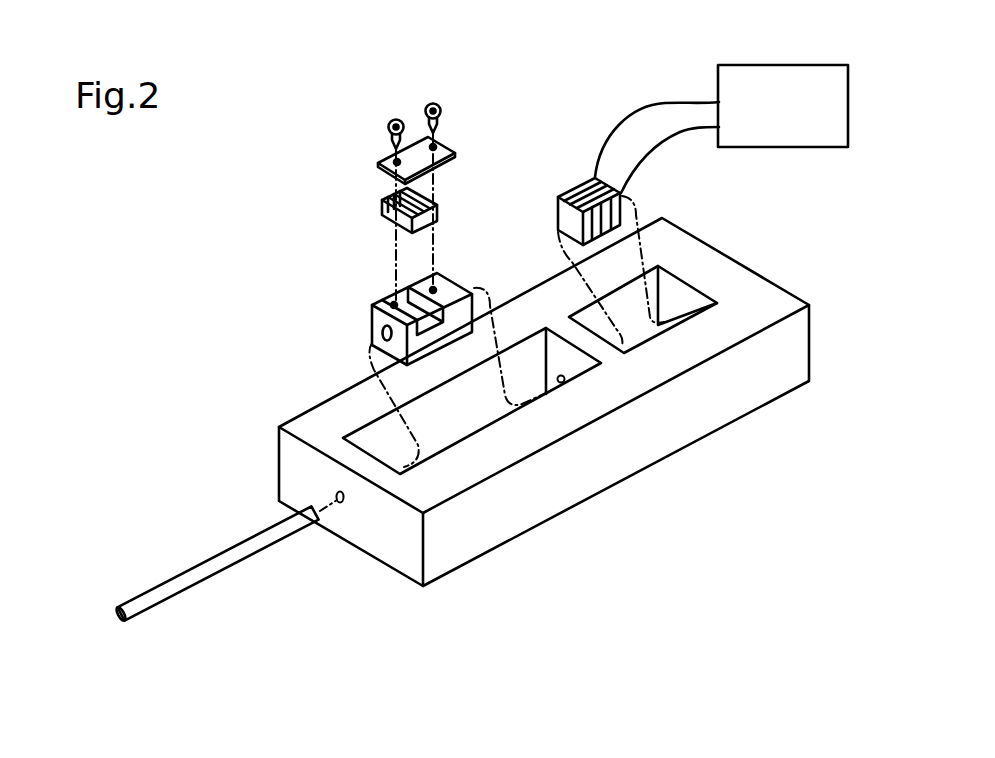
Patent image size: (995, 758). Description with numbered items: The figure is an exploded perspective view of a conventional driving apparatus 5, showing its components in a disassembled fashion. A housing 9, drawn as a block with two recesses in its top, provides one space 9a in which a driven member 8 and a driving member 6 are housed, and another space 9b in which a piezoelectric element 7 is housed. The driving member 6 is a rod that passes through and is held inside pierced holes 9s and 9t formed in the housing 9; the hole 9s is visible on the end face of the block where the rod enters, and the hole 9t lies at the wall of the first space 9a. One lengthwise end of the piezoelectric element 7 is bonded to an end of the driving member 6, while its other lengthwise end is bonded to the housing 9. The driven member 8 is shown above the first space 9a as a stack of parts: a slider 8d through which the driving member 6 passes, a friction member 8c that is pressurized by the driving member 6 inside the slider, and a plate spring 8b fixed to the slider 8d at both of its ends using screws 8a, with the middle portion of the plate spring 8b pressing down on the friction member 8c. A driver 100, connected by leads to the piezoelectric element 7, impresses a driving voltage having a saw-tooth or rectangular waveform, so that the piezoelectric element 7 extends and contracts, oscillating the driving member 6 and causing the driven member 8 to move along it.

The driving apparatus 5 is at (613, 523).
The driving member 6 is at (212, 561).
The piezoelectric element 7 is at (577, 188).
The driven member 8 is at (274, 304).
The screws 8a is at (384, 125).
The plate spring 8b is at (377, 165).
The friction member 8c is at (371, 212).
The slider 8d is at (372, 320).
The housing 9 is at (716, 399).
The space 9a is at (374, 434).
The space 9b is at (680, 293).
The pierced hole 9s is at (342, 505).
The pierced hole 9t is at (565, 382).
The driver 100 is at (835, 147).